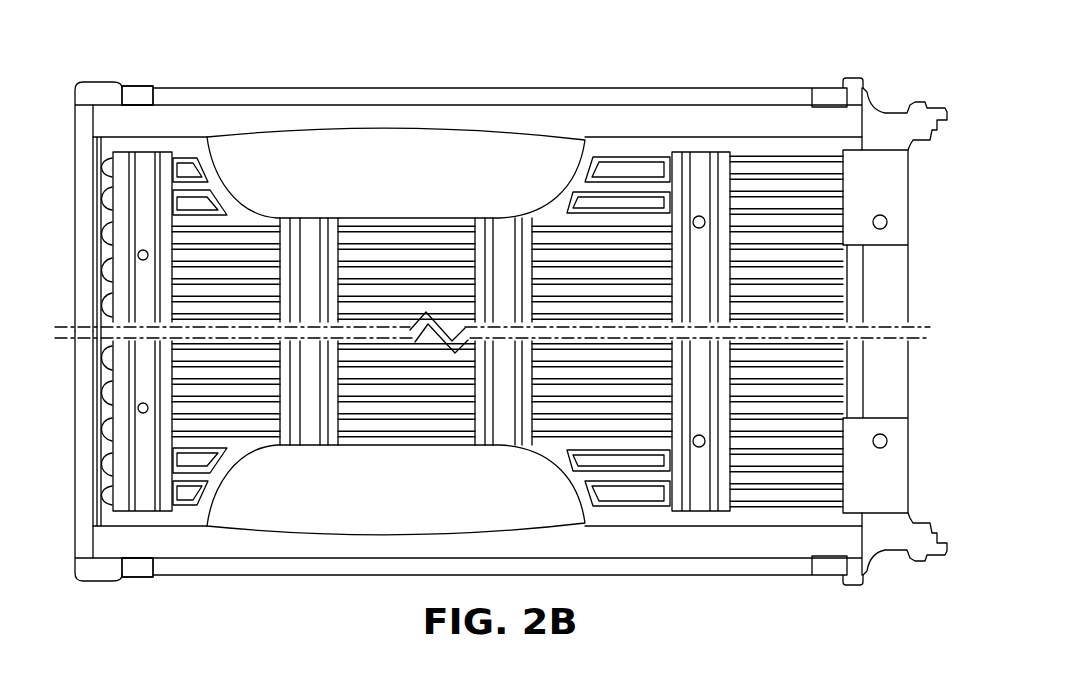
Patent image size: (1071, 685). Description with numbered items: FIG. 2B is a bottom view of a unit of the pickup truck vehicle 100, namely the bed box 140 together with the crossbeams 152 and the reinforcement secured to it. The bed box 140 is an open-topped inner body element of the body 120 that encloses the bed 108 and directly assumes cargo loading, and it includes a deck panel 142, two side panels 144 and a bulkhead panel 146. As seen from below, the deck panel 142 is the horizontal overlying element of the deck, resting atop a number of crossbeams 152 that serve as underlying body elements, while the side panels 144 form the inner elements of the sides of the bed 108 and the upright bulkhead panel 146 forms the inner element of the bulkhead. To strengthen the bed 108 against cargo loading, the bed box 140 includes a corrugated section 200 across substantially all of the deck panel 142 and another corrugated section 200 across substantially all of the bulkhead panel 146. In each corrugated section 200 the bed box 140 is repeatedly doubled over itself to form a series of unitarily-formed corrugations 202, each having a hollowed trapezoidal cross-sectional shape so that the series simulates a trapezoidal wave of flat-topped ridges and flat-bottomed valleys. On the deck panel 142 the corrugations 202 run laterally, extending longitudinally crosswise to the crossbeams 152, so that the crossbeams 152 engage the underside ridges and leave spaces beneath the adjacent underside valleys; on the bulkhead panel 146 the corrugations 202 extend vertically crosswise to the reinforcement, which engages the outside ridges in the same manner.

The vehicle 100 is at (98, 82).
The bed 108 is at (183, 87).
The body 120 is at (257, 87).
The bed box 140 is at (340, 88).
The side panel 144 is at (405, 88).
The deck panel 142 is at (608, 152).
The corrugated section 200 is at (92, 430).
The corrugation 202 is at (98, 472).
The bulkhead panel 146 is at (75, 383).
The crossbeam 152 is at (144, 512).